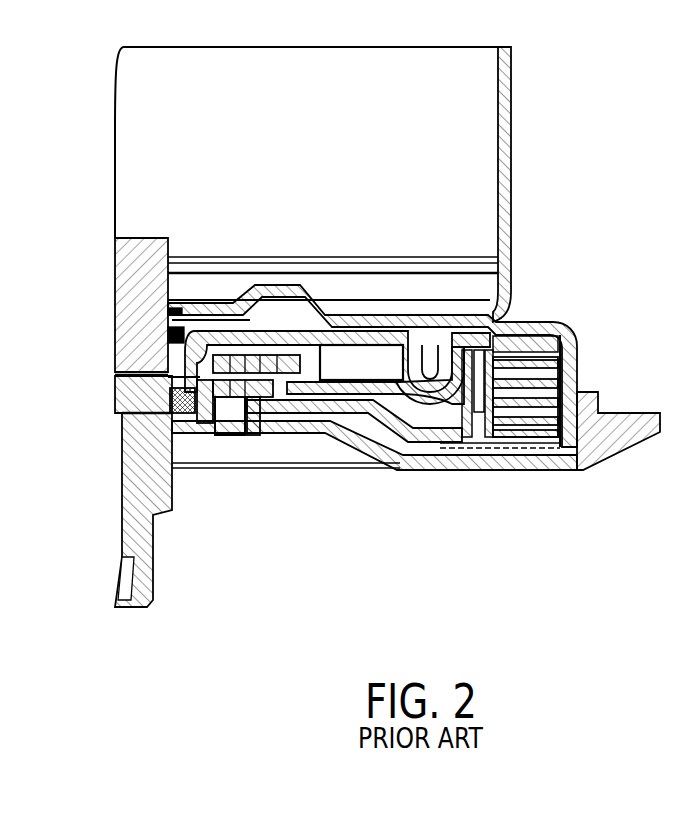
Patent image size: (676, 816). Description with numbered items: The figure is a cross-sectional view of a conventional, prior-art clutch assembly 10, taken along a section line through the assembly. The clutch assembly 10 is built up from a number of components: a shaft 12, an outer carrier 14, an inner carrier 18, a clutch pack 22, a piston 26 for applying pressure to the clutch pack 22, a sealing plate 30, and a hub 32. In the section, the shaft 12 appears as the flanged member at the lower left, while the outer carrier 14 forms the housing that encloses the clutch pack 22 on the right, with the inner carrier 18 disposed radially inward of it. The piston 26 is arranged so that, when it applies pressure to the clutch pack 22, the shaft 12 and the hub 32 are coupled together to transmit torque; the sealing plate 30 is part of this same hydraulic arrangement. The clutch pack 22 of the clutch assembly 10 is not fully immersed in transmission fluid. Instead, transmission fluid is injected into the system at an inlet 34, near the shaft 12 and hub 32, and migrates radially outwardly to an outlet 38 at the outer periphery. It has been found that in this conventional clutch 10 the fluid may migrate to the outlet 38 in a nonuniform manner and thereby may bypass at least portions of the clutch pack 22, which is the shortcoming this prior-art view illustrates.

The clutch assembly 10 is at (538, 186).
The shaft 12 is at (148, 542).
The outer carrier 14 is at (568, 342).
The inner carrier 18 is at (480, 428).
The clutch pack 22 is at (547, 383).
The piston 26 is at (492, 343).
The sealing plate 30 is at (438, 410).
The hub 32 is at (170, 377).
The inlet 34 is at (168, 333).
The outlet 38 is at (592, 393).